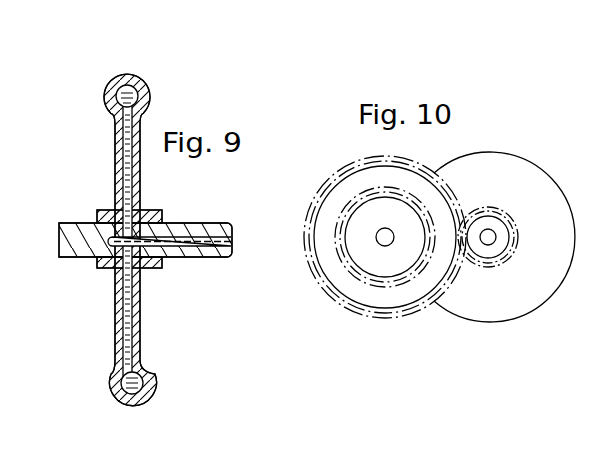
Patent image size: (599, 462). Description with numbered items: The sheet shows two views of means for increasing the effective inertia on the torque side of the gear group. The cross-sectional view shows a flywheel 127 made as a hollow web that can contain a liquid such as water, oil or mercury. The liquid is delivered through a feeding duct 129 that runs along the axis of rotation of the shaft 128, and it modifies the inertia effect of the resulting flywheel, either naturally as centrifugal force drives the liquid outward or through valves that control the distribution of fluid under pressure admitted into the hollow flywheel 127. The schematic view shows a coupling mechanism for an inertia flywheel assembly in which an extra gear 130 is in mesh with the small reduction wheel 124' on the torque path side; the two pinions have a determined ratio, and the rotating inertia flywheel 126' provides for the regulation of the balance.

In FIG. 9, the flywheel 127 is at (108, 92).
In FIG. 9, the shaft 128 is at (80, 228).
In FIG. 9, the feeding duct 129 is at (203, 236).
In FIG. 10, the small reduction wheel 124' is at (385, 258).
In FIG. 10, the rotating inertia flywheel 126' is at (504, 256).
In FIG. 10, the extra gear 130 is at (505, 195).